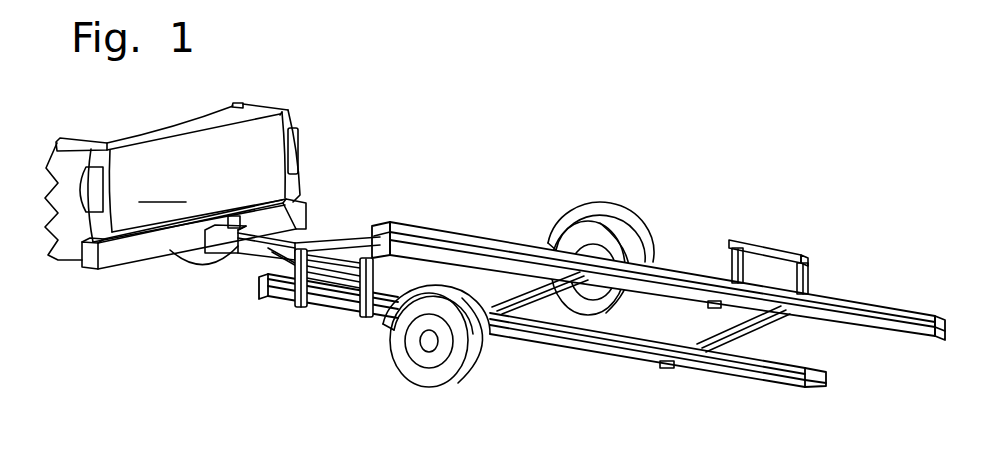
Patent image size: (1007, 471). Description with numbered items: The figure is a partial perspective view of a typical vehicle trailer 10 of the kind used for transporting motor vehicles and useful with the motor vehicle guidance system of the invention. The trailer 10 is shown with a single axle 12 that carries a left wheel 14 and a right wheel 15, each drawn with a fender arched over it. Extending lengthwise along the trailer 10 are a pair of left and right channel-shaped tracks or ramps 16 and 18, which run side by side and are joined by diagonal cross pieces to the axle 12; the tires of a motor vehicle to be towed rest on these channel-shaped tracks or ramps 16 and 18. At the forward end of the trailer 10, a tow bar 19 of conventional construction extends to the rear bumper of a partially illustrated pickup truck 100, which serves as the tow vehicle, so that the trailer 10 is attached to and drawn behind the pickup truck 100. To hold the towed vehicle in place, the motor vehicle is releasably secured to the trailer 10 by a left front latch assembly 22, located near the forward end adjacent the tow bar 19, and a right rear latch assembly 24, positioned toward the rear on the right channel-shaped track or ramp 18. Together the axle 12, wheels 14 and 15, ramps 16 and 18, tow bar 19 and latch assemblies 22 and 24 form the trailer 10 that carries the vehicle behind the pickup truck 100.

The vehicle trailer 10 is at (432, 128).
The single axle 12 is at (527, 295).
The left wheel 14 is at (425, 374).
The right wheel 15 is at (580, 240).
The left channel-shaped track or ramp 16 is at (703, 384).
The right channel-shaped track or ramp 18 is at (857, 291).
The tow bar 19 is at (246, 243).
The left front latch assembly 22 is at (331, 310).
The right rear latch assembly 24 is at (798, 238).
The pickup truck 100 is at (175, 186).